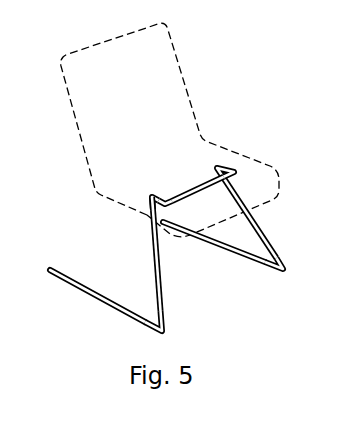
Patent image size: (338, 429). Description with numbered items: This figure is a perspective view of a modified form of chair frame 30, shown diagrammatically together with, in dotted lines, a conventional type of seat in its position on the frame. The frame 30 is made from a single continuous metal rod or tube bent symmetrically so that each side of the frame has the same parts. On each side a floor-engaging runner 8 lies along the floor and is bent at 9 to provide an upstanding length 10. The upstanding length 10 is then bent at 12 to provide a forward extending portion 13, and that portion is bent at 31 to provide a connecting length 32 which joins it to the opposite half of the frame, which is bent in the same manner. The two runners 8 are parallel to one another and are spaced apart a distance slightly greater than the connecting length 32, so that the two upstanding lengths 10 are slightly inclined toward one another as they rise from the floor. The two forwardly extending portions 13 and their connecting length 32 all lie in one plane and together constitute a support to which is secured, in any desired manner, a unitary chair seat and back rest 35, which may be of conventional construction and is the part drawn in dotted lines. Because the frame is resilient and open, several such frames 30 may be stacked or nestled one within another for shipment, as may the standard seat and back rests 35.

The runner 8 is at (91, 300).
The bend 9 is at (155, 322).
The upstanding length 10 is at (154, 265).
The bend 12 is at (160, 207).
The forward extending portion 13 is at (163, 198).
The chair frame 30 is at (177, 228).
The bend 31 is at (168, 199).
The connecting length 32 is at (191, 193).
The unitary chair seat and back rest 35 is at (73, 78).